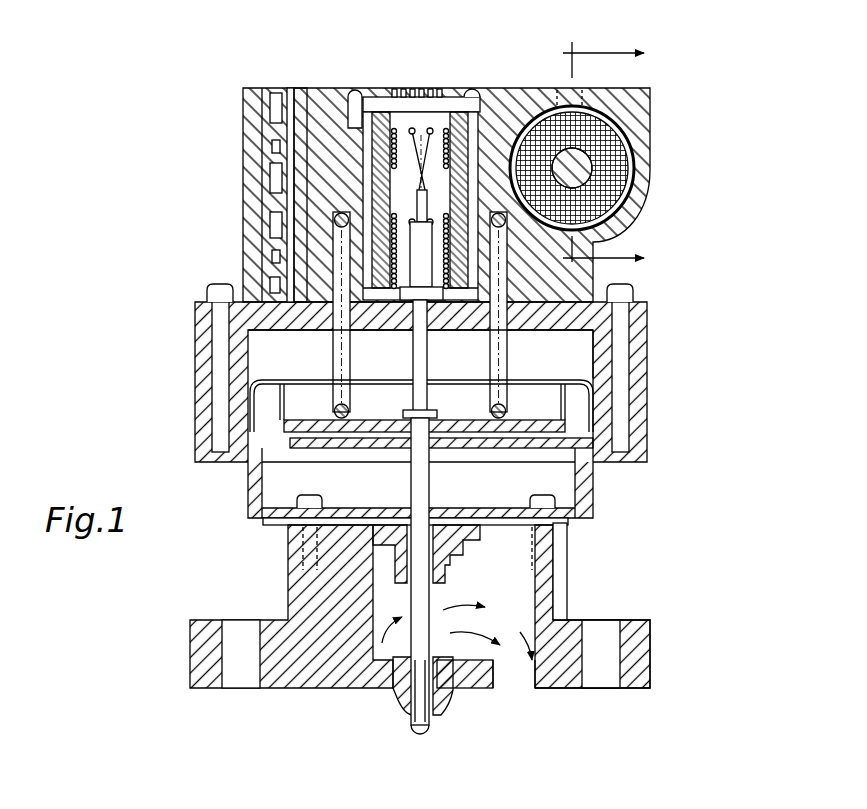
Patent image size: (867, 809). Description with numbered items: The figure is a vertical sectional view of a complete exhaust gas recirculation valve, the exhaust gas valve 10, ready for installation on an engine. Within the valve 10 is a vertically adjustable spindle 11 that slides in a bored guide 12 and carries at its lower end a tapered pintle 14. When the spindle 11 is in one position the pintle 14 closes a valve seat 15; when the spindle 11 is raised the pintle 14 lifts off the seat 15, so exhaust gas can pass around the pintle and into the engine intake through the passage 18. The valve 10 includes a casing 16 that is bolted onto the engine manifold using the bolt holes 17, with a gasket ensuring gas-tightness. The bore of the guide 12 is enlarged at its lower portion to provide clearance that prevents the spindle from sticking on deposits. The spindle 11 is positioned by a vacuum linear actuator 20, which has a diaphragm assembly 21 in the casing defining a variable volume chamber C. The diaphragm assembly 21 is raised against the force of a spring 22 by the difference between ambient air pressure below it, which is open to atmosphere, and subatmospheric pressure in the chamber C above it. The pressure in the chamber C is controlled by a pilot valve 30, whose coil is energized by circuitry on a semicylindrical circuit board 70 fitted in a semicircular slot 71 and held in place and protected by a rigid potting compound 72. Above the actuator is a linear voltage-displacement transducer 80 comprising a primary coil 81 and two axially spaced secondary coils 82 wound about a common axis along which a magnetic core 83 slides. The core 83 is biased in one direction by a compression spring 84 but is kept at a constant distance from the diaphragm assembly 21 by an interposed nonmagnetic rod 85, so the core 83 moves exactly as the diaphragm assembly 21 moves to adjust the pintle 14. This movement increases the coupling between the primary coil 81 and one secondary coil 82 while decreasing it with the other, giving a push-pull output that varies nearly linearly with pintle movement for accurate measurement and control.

The exhaust gas valve 10 is at (652, 484).
The spindle 11 is at (430, 593).
The bored guide 12 is at (465, 551).
The tapered pintle 14 is at (440, 698).
The valve seat 15 is at (393, 668).
The casing 16 is at (558, 674).
The bolt holes 17 is at (234, 630).
The passage 18 is at (515, 682).
The vacuum linear actuator 20 is at (652, 335).
The diaphragm assembly 21 is at (519, 436).
The spring 22 is at (497, 352).
The pilot valve 30 is at (632, 133).
The circuit board 70 is at (291, 100).
The semicircular slot 71 is at (301, 95).
The potting compound 72 is at (265, 160).
The linear voltage-displacement transducer 80 is at (360, 170).
The primary coil 81 is at (455, 198).
The secondary coils 82 is at (455, 170).
The magnetic core 83 is at (420, 246).
The compression spring 84 is at (425, 156).
The nonmagnetic rod 85 is at (420, 352).
The variable volume chamber C is at (568, 356).